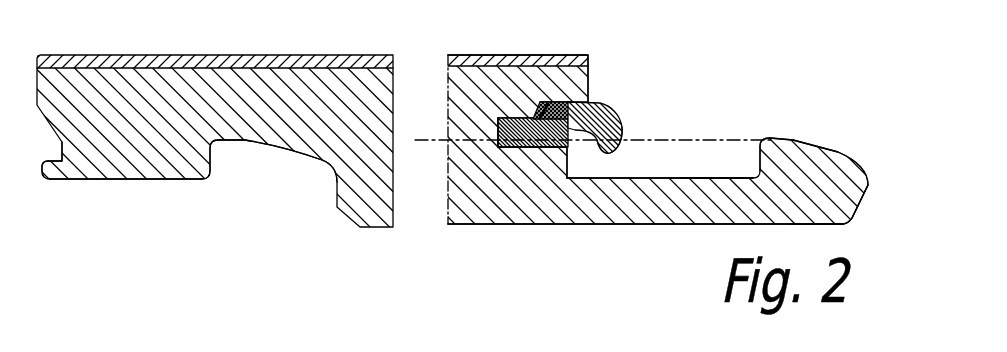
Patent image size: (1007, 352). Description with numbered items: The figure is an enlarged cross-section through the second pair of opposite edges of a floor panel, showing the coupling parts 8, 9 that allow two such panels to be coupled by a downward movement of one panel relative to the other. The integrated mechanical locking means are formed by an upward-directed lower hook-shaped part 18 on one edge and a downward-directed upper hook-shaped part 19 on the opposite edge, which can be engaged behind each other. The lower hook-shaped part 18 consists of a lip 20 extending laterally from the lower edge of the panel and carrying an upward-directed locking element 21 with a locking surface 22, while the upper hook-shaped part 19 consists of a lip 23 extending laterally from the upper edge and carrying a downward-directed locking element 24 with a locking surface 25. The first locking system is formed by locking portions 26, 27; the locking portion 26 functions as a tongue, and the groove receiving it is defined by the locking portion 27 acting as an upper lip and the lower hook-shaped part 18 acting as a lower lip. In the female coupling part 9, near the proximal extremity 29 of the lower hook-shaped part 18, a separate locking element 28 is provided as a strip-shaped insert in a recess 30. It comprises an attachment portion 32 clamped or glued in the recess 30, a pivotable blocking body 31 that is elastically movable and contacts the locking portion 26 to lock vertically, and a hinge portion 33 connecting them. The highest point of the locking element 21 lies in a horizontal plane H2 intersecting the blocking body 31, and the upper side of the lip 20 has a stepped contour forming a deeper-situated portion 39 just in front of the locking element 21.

The coupling part 8 is at (98, 230).
The female coupling part 9 is at (796, 65).
The lower hook-shaped part 18 is at (664, 222).
The upper hook-shaped part 19 is at (136, 122).
The lip 20 is at (637, 200).
The upward-directed locking element 21 is at (803, 163).
The locking surface 22 is at (760, 160).
The lip 23 is at (253, 127).
The downward-directed locking element 24 is at (130, 160).
The locking surface 25 is at (213, 163).
The locking portion 26 is at (60, 168).
The locking portion 27 is at (624, 130).
The separate locking element 28 is at (520, 104).
The proximal extremity 29 is at (537, 182).
The recess 30 is at (497, 146).
The blocking body 31 is at (614, 114).
The attachment portion 32 is at (518, 115).
The hinge portion 33 is at (548, 104).
The deeper-situated portion 39 is at (723, 178).
The horizontal plane H2 is at (664, 138).